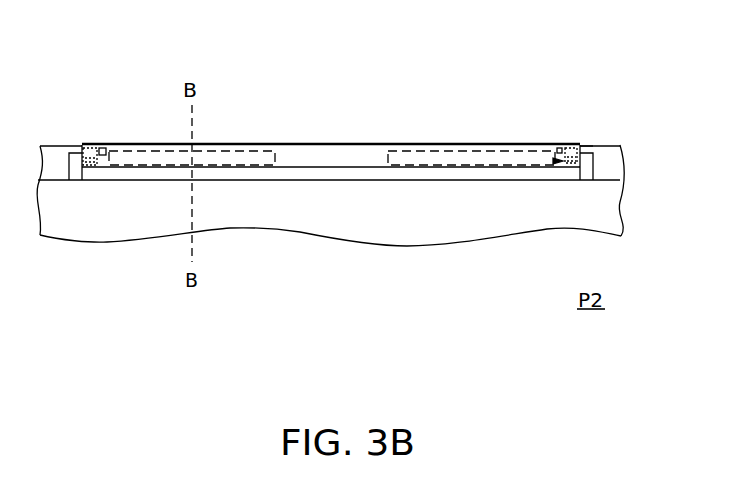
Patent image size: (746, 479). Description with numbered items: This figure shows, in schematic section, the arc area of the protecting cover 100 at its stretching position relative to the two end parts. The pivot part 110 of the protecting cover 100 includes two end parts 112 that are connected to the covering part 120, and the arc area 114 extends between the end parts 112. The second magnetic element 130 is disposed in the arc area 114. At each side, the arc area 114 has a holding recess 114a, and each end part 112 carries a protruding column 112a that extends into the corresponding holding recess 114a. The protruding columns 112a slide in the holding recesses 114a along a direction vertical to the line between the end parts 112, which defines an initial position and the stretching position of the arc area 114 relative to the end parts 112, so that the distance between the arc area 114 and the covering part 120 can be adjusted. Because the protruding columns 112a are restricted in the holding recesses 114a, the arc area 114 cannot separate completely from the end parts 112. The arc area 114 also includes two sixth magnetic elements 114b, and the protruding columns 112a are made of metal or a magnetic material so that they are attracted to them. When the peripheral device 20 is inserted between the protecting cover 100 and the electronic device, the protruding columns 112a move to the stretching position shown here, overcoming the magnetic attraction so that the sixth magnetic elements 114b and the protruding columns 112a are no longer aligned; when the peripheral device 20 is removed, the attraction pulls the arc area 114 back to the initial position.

The protecting cover 100 is at (155, 80).
The pivot part 110 is at (643, 75).
The end part 112 is at (588, 144).
The protruding column 112a is at (576, 148).
The arc area 114 is at (358, 145).
The holding recess 114a is at (553, 161).
The sixth magnetic element 114b is at (558, 147).
The second magnetic element 130 is at (222, 151).
The peripheral device 20 is at (630, 165).
The covering part 120 is at (613, 196).